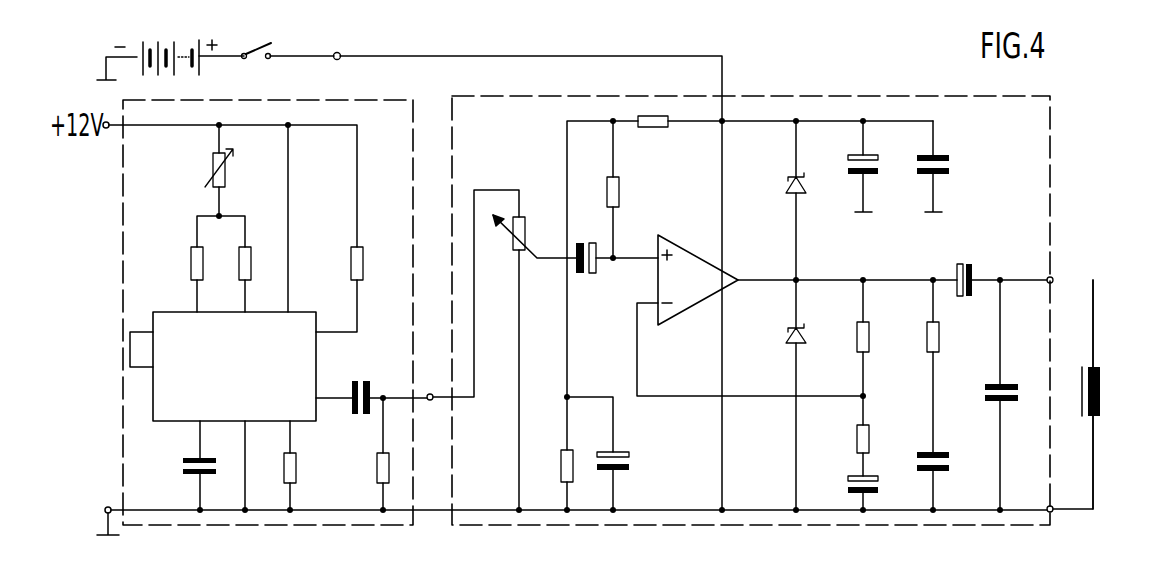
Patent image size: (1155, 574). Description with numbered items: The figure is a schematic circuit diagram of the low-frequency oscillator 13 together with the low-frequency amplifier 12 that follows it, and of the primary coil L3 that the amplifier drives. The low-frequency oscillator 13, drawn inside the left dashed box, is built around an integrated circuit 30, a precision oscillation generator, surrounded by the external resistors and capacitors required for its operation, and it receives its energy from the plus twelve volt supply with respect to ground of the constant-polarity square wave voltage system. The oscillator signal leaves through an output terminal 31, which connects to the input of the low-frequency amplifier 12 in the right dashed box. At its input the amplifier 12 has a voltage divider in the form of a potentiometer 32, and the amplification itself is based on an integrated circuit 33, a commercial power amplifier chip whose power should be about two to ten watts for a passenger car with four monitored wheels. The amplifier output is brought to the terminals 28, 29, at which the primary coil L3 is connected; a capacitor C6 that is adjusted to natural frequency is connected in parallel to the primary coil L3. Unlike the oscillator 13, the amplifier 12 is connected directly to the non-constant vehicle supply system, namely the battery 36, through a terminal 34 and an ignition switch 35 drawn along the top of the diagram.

The battery 36 is at (198, 35).
The ignition switch 35 is at (258, 42).
The terminal 34 is at (340, 52).
The low-frequency oscillator 13 is at (337, 99).
The low-frequency amplifier 12 is at (787, 96).
The integrated circuit 30 is at (172, 311).
The output terminal 31 is at (432, 394).
The potentiometer 32 is at (545, 228).
The integrated circuit 33 is at (690, 255).
The terminal 28 is at (1052, 277).
The terminal 29 is at (1052, 512).
The capacitor C6 is at (1022, 382).
The primary coil L3 is at (1100, 388).